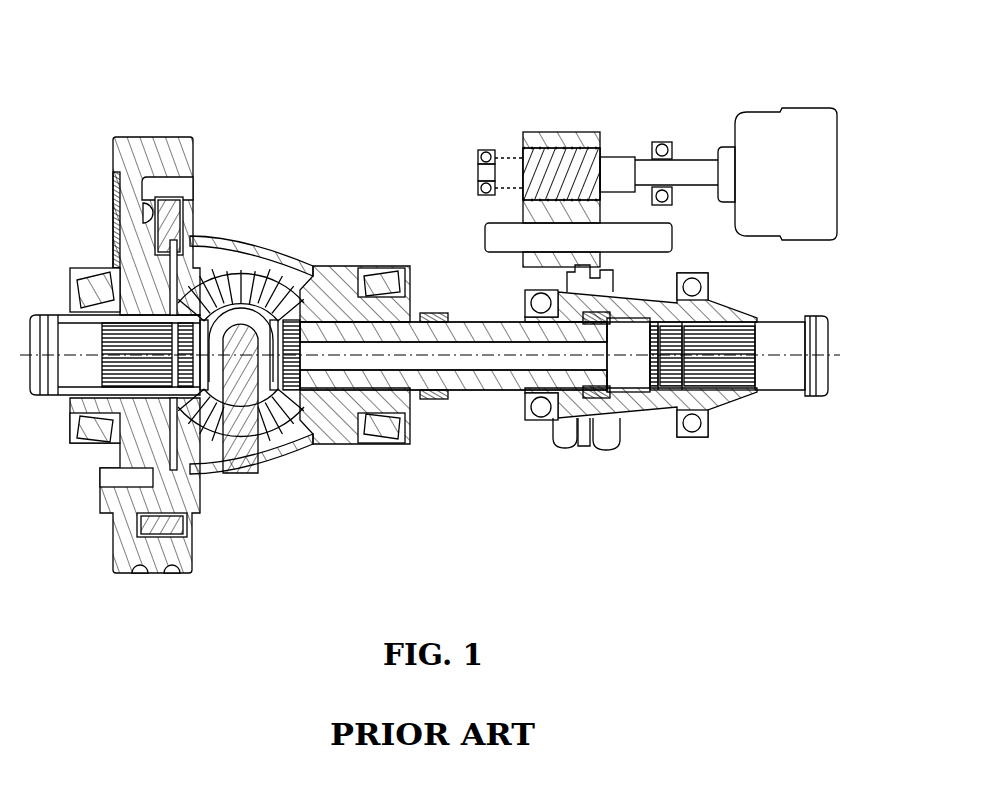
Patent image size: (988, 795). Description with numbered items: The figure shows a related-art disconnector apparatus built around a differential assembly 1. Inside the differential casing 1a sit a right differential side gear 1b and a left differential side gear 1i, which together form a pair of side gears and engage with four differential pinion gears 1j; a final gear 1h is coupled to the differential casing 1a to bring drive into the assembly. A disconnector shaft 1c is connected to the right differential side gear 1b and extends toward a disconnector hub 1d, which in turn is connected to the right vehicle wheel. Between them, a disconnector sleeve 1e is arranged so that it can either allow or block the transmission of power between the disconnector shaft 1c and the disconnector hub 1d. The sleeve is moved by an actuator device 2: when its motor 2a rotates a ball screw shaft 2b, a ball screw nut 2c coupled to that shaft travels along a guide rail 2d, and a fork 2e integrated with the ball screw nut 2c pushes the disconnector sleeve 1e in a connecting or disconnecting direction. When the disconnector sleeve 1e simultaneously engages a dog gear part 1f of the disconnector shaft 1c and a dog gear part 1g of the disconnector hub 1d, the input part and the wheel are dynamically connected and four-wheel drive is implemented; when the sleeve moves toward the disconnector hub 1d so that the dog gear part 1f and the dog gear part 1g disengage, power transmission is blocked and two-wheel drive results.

The differential assembly 1 is at (429, 345).
The differential casing 1a is at (243, 262).
The right differential side gear 1b is at (316, 446).
The disconnector shaft 1c is at (463, 388).
The disconnector hub 1d is at (660, 410).
The disconnector sleeve 1e is at (567, 277).
The dog gear part 1f is at (563, 420).
The dog gear part 1g is at (603, 415).
The final gear 1h is at (185, 152).
The left differential side gear 1i is at (207, 460).
The differential pinion gears 1j is at (284, 456).
The actuator device 2 is at (633, 152).
The motor 2a is at (790, 115).
The ball screw shaft 2b is at (530, 160).
The ball screw nut 2c is at (522, 208).
The guide rail 2d is at (663, 233).
The fork 2e is at (597, 266).